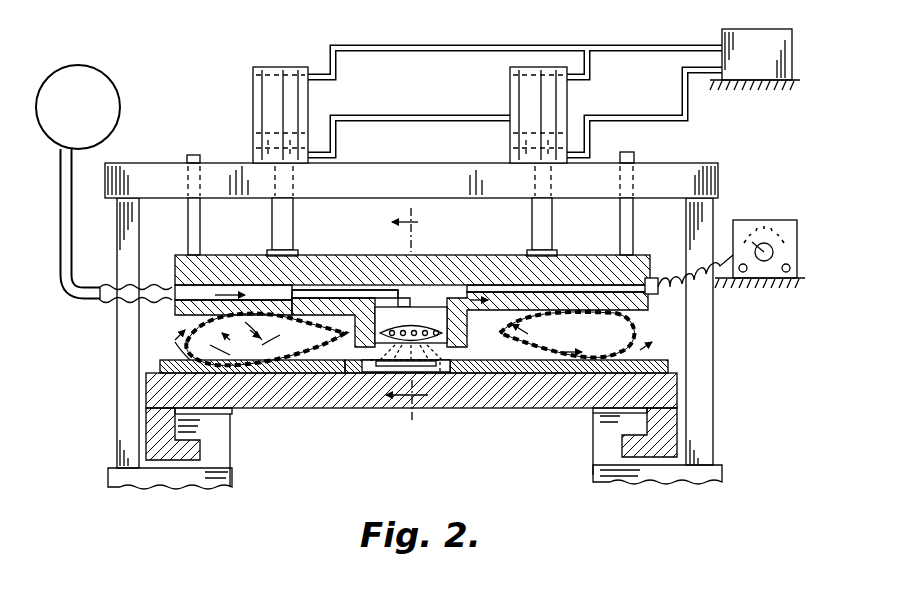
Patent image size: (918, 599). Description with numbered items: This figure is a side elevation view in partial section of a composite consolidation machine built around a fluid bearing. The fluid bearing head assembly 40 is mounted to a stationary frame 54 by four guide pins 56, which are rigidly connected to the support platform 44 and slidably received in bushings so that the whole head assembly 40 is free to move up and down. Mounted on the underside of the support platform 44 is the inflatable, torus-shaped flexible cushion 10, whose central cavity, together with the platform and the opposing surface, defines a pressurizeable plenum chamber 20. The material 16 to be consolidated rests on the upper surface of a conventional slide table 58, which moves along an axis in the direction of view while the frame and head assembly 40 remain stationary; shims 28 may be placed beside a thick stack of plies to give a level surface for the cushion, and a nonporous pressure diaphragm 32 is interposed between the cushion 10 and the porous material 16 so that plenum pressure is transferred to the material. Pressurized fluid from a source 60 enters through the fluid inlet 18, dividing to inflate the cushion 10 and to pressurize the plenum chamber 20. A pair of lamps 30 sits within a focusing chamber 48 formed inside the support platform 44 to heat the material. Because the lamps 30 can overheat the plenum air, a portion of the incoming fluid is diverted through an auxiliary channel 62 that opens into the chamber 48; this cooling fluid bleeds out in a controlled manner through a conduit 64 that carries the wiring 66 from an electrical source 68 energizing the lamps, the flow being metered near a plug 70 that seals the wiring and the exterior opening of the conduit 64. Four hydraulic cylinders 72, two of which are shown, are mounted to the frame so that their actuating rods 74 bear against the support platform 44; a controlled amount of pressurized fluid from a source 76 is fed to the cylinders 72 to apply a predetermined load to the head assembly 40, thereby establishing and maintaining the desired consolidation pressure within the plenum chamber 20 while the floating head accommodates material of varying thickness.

The flexible cushion 10 is at (634, 337).
The material 16 is at (445, 374).
The fluid inlet 18 is at (160, 300).
The plenum chamber 20 is at (330, 374).
The shims 28 is at (302, 374).
The lamps 30 is at (372, 374).
The pressure diaphragm 32 is at (165, 364).
The head assembly 40 is at (342, 252).
The support platform 44 is at (215, 255).
The focusing chamber 48 is at (430, 315).
The frame 54 is at (138, 166).
The guide pins 56 is at (188, 224).
The slide table 58 is at (155, 410).
The source 60 is at (97, 90).
The auxiliary channel 62 is at (385, 255).
The conduit 64 is at (570, 285).
The wiring 66 is at (690, 285).
The electrical source 68 is at (748, 221).
The plug 70 is at (652, 278).
The hydraulic cylinders 72 is at (253, 90).
The actuating rods 74 is at (293, 215).
The source 76 is at (752, 36).